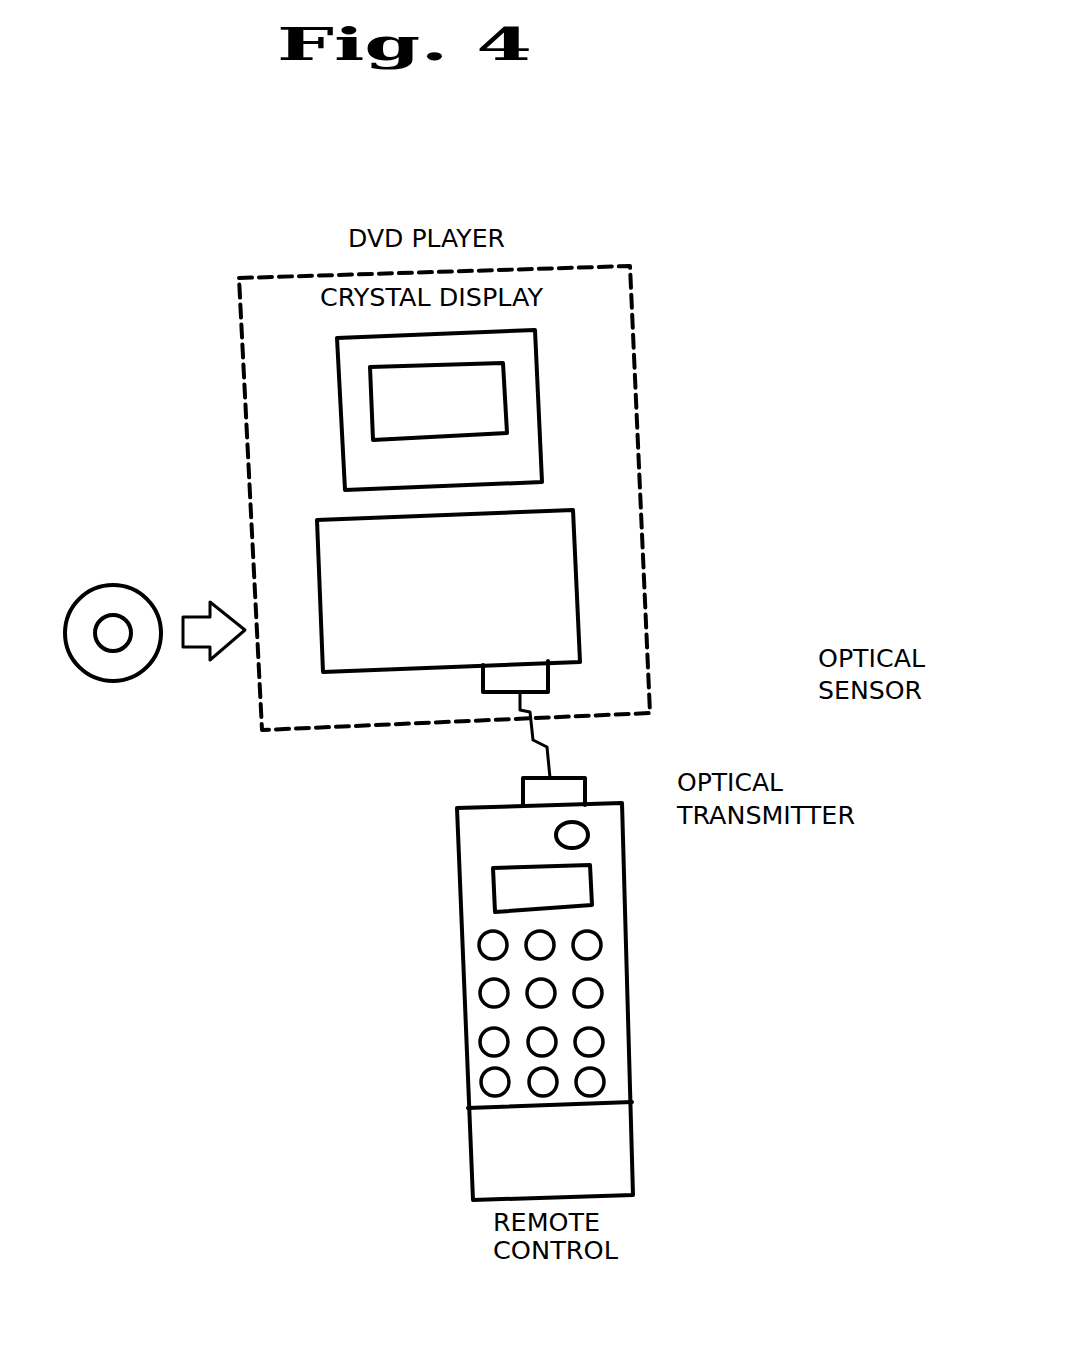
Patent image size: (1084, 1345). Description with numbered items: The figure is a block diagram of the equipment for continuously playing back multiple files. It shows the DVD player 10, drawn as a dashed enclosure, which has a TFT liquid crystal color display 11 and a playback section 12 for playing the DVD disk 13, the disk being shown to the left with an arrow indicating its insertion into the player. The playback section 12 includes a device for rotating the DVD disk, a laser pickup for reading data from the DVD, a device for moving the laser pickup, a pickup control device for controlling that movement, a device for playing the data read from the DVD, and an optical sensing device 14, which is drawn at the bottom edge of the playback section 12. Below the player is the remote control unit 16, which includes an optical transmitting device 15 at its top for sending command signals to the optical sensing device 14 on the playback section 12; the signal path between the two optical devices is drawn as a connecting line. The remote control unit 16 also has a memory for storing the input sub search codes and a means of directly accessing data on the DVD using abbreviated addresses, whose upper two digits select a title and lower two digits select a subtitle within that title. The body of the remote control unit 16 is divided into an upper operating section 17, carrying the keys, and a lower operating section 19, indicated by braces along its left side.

The DVD player 10 is at (630, 302).
The TFT liquid crystal color display 11 is at (537, 370).
The playback section 12 is at (555, 557).
The DVD disk 13 is at (119, 597).
The optical sensing device 14 is at (537, 673).
The optical transmitting device 15 is at (577, 782).
The remote control unit 16 is at (613, 887).
The upper operating section 17 is at (450, 1102).
The lower operating section 19 is at (452, 1110).